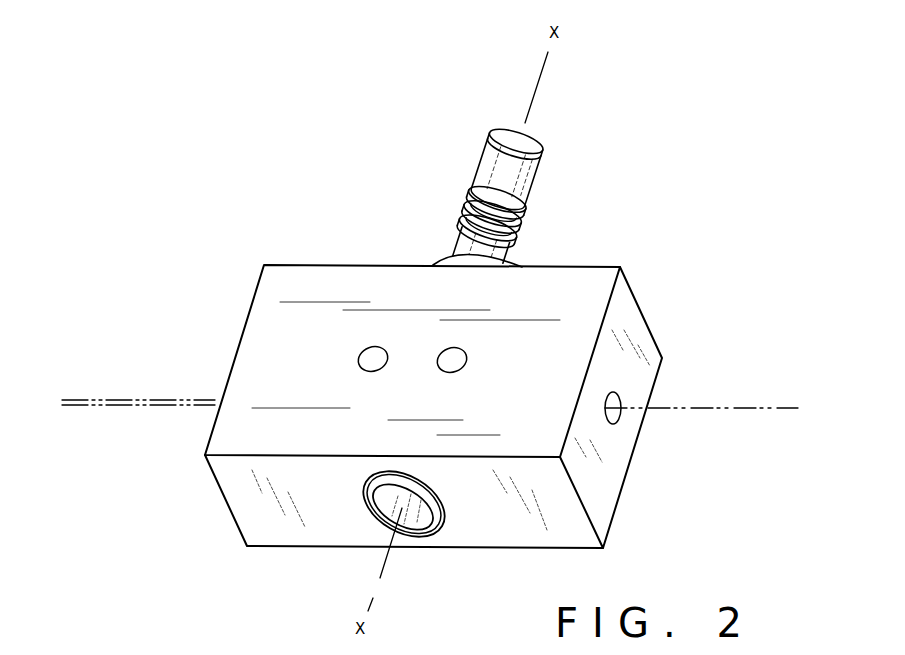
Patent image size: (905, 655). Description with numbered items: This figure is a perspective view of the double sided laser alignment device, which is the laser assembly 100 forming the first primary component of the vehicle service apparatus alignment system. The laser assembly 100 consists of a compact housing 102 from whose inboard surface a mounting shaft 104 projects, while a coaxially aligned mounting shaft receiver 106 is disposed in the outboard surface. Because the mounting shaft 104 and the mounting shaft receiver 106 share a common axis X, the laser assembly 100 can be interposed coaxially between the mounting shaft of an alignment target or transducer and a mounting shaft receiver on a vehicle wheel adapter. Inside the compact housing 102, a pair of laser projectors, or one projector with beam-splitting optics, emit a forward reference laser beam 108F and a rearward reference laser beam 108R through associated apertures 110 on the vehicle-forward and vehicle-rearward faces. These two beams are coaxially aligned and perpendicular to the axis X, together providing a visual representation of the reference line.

The laser assembly 100 is at (597, 249).
The compact housing 102 is at (577, 310).
The mounting shaft 104 is at (538, 180).
The mounting shaft receiver 106 is at (413, 538).
The forward reference laser beam 108F is at (177, 406).
The rearward reference laser beam 108R is at (700, 407).
The aperture 110 is at (619, 428).